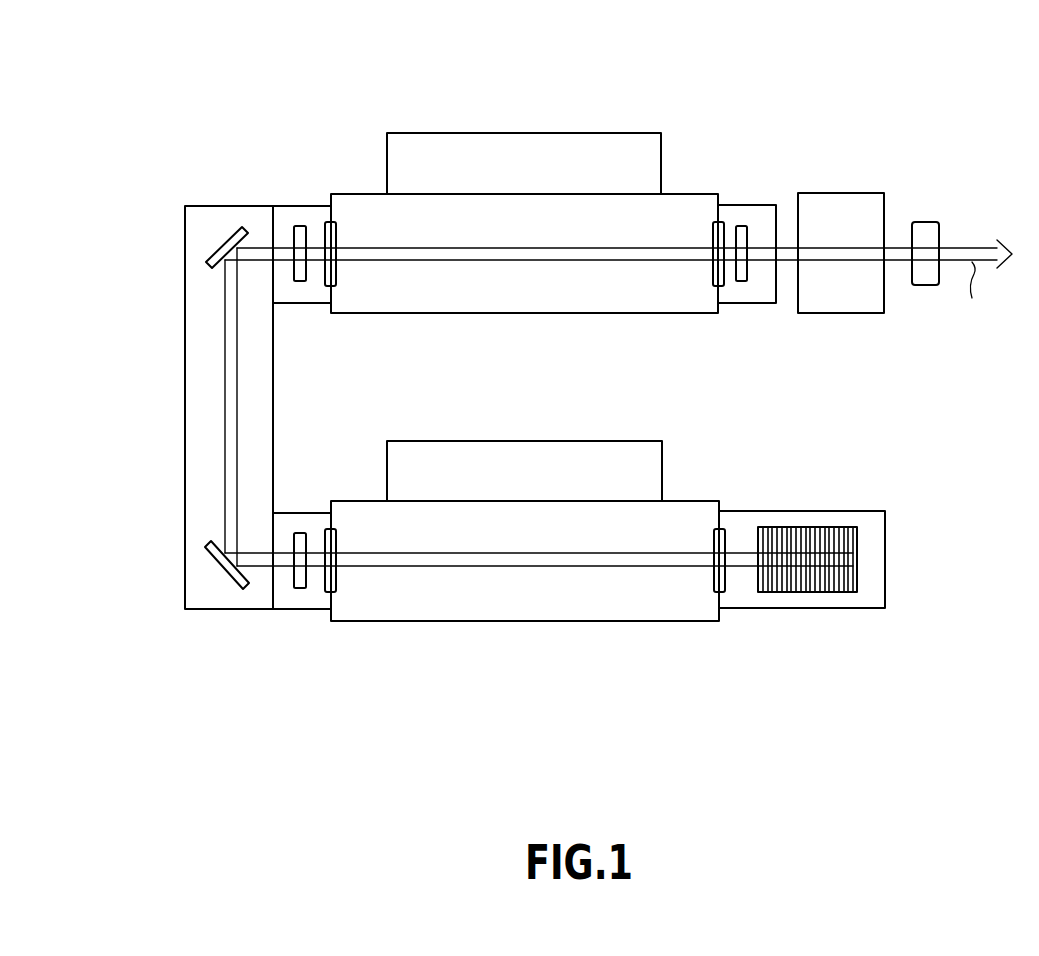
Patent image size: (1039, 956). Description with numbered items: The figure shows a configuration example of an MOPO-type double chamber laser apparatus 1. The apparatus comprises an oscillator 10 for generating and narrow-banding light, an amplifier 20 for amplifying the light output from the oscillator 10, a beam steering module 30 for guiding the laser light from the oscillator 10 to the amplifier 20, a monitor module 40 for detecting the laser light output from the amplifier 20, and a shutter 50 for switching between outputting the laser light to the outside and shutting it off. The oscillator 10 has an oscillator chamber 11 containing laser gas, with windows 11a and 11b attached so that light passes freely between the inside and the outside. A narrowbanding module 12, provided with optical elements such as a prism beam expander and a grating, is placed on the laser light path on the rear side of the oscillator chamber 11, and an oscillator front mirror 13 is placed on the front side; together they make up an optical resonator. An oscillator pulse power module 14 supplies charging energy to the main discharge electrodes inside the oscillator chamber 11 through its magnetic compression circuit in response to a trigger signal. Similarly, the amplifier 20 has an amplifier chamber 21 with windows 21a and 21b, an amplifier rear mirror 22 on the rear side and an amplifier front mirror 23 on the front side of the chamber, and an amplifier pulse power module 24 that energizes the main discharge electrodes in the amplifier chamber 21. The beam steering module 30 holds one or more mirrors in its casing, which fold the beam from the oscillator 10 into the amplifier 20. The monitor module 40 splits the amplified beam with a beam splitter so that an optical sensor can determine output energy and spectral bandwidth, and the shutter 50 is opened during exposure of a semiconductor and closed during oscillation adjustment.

The double chamber laser apparatus 1 is at (892, 442).
The oscillator 10 is at (716, 705).
The oscillator chamber 11 is at (442, 622).
The window 11a is at (713, 537).
The window 11b is at (337, 537).
The narrowbanding module 12 is at (778, 608).
The oscillator front mirror 13 is at (302, 590).
The oscillator pulse power module 14 is at (520, 440).
The amplifier 20 is at (760, 72).
The amplifier chamber 21 is at (442, 313).
The window 21a is at (337, 273).
The window 21b is at (712, 273).
The amplifier rear mirror 22 is at (298, 223).
The amplifier front mirror 23 is at (740, 225).
The amplifier pulse power module 24 is at (522, 132).
The beam steering module 30 is at (185, 427).
The monitor module 40 is at (842, 315).
The shutter 50 is at (924, 220).